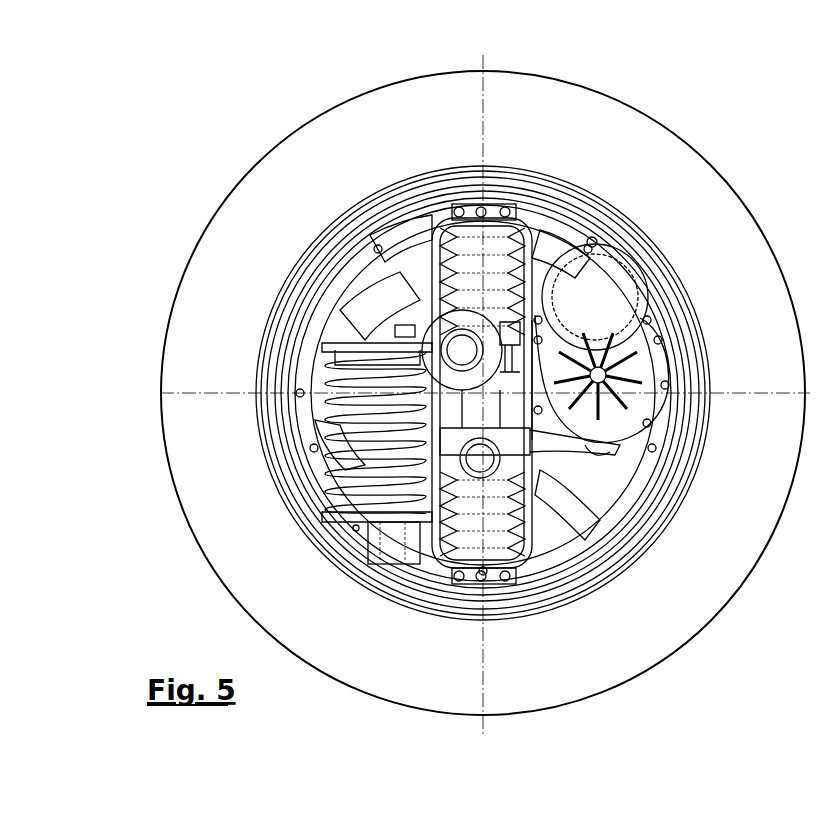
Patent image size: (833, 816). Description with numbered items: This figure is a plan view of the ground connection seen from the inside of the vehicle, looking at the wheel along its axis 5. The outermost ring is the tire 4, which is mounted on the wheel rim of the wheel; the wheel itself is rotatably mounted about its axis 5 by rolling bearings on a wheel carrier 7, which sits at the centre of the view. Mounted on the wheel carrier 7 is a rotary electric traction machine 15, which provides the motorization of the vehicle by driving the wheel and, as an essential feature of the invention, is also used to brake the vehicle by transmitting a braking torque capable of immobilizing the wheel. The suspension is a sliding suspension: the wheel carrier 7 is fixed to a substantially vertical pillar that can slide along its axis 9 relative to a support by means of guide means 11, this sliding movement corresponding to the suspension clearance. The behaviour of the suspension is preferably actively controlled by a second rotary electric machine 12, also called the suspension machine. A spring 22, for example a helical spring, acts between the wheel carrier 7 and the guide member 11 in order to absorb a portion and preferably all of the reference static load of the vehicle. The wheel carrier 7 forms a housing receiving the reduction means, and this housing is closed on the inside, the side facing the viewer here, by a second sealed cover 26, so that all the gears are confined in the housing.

The axis 9 is at (485, 64).
The tire 4 is at (395, 104).
The axis 5 is at (490, 384).
The second rotary electric machine 12 is at (440, 333).
The guide means 11 is at (408, 338).
The spring 22 is at (327, 372).
The wheel carrier 7 is at (405, 535).
The rotary electric traction machine 15 is at (597, 290).
The second sealed cover 26 is at (630, 425).